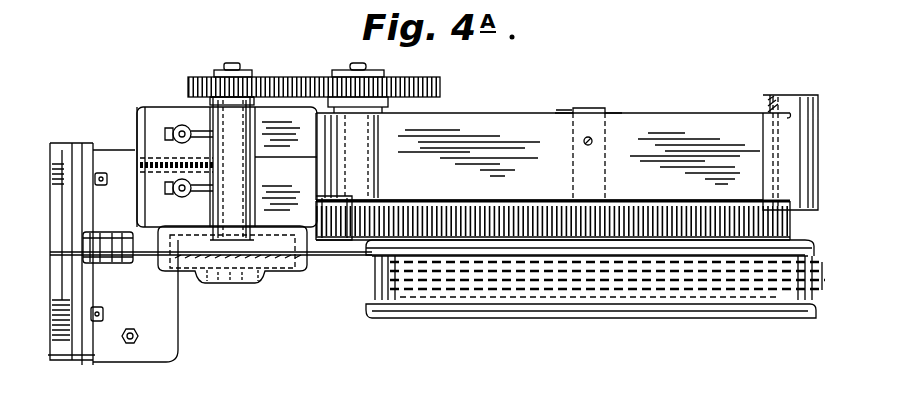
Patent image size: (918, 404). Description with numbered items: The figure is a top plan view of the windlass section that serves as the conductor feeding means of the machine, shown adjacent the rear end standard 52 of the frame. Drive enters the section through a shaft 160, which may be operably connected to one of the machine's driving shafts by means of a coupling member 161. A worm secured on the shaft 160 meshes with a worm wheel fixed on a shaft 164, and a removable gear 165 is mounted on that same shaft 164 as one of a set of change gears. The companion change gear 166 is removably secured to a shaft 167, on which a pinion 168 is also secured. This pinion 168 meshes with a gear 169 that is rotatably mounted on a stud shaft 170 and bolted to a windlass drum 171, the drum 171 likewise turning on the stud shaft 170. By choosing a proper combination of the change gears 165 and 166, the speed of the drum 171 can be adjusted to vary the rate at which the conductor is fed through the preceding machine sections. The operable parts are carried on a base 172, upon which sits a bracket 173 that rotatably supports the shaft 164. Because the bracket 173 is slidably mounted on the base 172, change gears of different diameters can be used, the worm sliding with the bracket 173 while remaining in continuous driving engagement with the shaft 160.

The rear end standard 52 is at (66, 151).
The shaft 160 is at (323, 258).
The coupling member 161 is at (110, 232).
The shaft 164 is at (236, 69).
The removable gear 165 is at (206, 79).
The gear 166 is at (343, 79).
The shaft 167 is at (371, 64).
The pinion 168 is at (357, 242).
The gear 169 is at (541, 212).
The stud shaft 170 is at (596, 112).
The windlass drum 171 is at (461, 305).
The base 172 is at (506, 128).
The bracket 173 is at (258, 120).